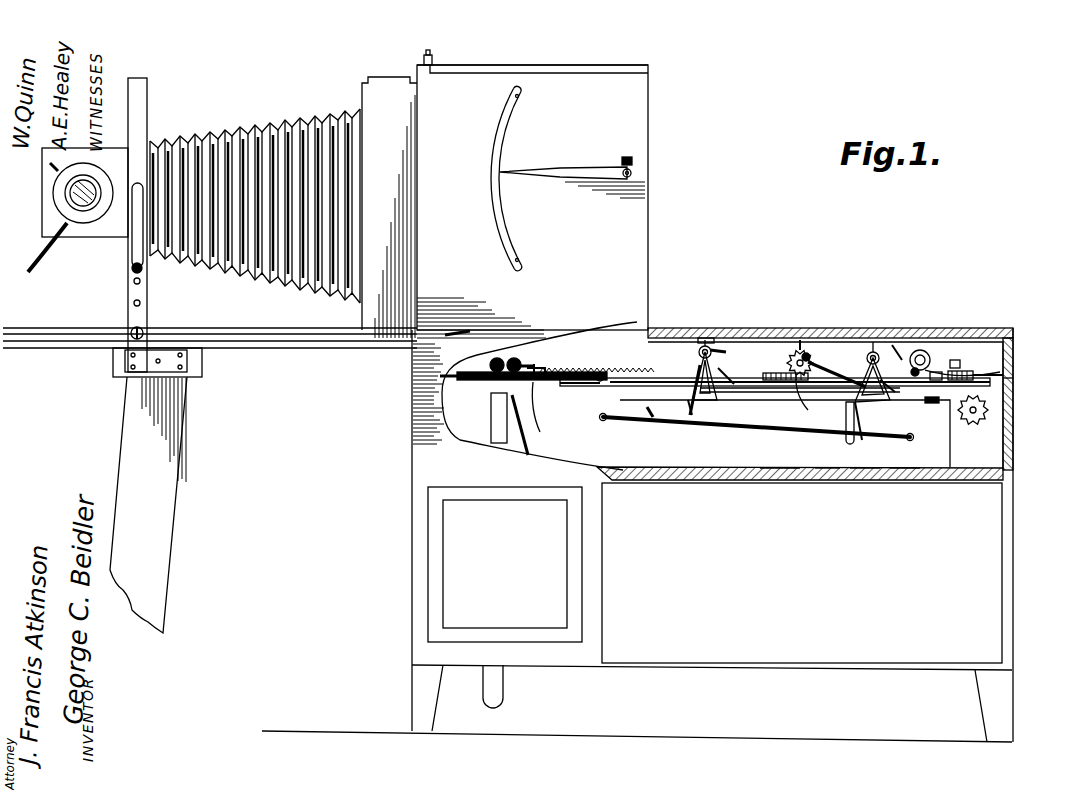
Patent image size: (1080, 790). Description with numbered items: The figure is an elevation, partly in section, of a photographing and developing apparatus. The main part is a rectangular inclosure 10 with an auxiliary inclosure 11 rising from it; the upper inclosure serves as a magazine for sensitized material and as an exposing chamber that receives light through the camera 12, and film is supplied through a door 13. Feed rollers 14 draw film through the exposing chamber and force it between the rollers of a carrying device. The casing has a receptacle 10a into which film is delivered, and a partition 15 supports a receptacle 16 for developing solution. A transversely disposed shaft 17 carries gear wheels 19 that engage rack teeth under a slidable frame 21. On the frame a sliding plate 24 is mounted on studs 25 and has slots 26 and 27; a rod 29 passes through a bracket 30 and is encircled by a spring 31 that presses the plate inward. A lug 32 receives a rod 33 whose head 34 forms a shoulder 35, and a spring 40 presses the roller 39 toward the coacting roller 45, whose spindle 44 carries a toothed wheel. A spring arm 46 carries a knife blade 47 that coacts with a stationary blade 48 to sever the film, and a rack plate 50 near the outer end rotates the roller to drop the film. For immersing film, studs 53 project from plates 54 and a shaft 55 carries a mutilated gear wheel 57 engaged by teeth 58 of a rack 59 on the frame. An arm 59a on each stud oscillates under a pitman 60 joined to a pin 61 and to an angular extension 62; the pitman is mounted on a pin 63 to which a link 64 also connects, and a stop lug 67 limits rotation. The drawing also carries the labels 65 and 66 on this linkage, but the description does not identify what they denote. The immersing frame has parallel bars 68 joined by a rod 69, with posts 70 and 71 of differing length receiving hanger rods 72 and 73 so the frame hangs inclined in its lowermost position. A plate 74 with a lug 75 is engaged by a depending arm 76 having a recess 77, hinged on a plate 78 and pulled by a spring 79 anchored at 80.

The rectangular inclosure 10 is at (1005, 518).
The receptacle 10a is at (472, 440).
The auxiliary inclosure 11 is at (630, 231).
The camera 12 is at (64, 205).
The door 13 is at (533, 70).
The feed rollers 14 is at (255, 206).
The partition 15 is at (780, 475).
The receptacle 16 is at (858, 478).
The shaft 17 is at (990, 410).
The gear wheels 19 is at (966, 424).
The frame 21 is at (1005, 378).
The sliding plate 24 is at (602, 373).
The studs 25 is at (585, 386).
The slot 26 is at (583, 371).
The slot 27 is at (612, 380).
The rod 29 is at (790, 390).
The bracket 30 is at (760, 393).
The spring 31 is at (652, 420).
The lug 32 is at (546, 414).
The rod 33 is at (536, 365).
The head 34 is at (517, 358).
The shoulder 35 is at (520, 445).
The roller 39 is at (490, 405).
The spring 40 is at (555, 372).
The spindle 44 is at (499, 357).
The roller 45 is at (470, 380).
The spring arm 46 is at (440, 377).
The knife blade 47 is at (472, 375).
The stationary blade 48 is at (522, 362).
The rack plate 50 is at (928, 403).
The stud 53 is at (720, 348).
The plate 54 is at (706, 338).
The shaft 55 is at (798, 350).
The mutilated gear wheel 57 is at (781, 367).
The teeth 58 is at (809, 402).
The rack 59 is at (837, 363).
The arm 59a is at (693, 417).
The pitman 60 is at (873, 350).
The pin 61 is at (808, 354).
The angular extension 62 is at (731, 369).
The pin 63 is at (896, 350).
The link 64 is at (848, 425).
The wheel 65 is at (922, 352).
The arm 66 is at (886, 393).
The stop lug 67 is at (803, 348).
The parallel bars 68 is at (762, 428).
The rod 69 is at (604, 422).
The post 70 is at (690, 417).
The post 71 is at (860, 425).
The hanger rod 72 is at (697, 385).
The hanger rod 73 is at (825, 478).
The plate 74 is at (905, 478).
The lug 75 is at (934, 371).
The depending arm 76 is at (959, 371).
The recess 77 is at (988, 369).
The plate 78 is at (956, 360).
The spring 79 is at (962, 359).
The anchor 80 is at (918, 368).